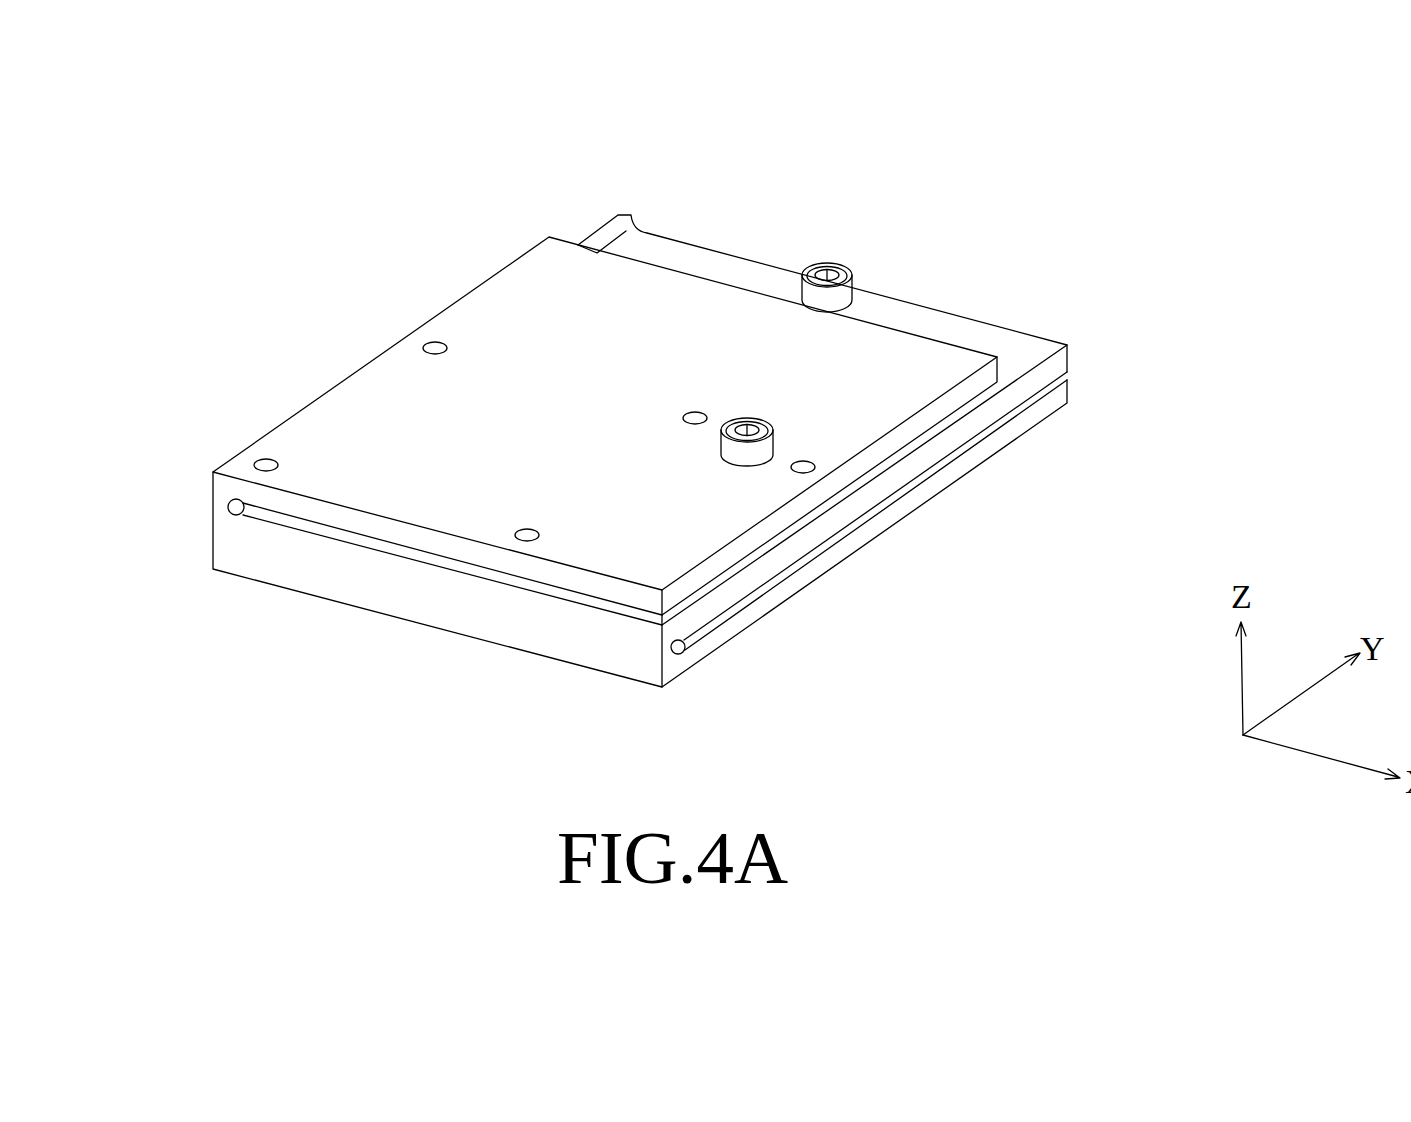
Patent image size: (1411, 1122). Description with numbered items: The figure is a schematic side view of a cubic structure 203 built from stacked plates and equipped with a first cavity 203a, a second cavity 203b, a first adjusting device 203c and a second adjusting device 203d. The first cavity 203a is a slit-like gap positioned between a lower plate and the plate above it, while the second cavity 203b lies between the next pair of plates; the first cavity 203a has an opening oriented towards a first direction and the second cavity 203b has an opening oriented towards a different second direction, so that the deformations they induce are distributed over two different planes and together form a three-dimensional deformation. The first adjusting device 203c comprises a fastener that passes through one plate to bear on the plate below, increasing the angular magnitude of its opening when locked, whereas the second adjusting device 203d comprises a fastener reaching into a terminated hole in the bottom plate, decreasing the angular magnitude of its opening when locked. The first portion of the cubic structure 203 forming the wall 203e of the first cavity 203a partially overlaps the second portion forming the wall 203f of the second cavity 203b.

The cubic structure 203 is at (214, 85).
The first cavity 203a is at (1003, 415).
The second cavity 203b is at (293, 520).
The first adjusting device 203c is at (853, 276).
The second adjusting device 203d is at (747, 466).
The wall of the first cavity 203e is at (537, 625).
The wall of the second cavity 203f is at (437, 543).